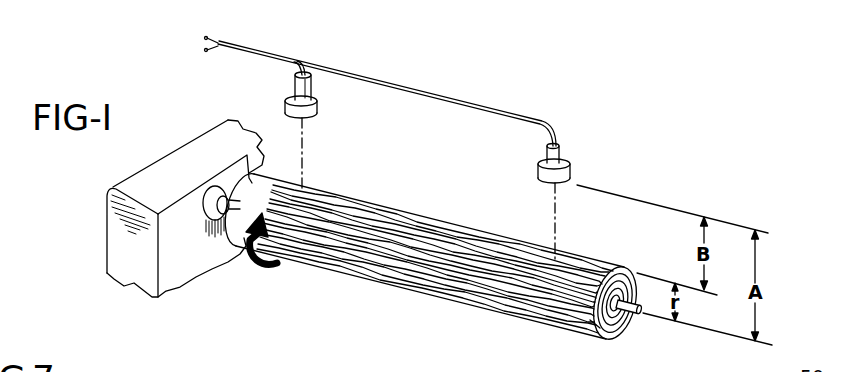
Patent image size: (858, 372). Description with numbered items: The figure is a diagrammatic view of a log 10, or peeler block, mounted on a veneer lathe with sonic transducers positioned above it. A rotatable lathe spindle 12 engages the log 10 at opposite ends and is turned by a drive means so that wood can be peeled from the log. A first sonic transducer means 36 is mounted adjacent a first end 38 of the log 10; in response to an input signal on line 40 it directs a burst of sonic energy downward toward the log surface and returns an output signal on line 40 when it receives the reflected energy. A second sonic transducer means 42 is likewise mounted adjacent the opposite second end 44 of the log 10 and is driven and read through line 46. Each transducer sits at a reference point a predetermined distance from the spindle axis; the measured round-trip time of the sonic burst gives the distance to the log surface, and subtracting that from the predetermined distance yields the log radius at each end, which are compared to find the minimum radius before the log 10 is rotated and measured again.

The log 10 is at (466, 242).
The lathe spindle 12 is at (238, 197).
The first sonic transducer means 36 is at (311, 88).
The first end 38 is at (270, 186).
The line 40 is at (250, 54).
The second sonic transducer means 42 is at (547, 154).
The second end 44 is at (578, 327).
The line 46 is at (437, 96).